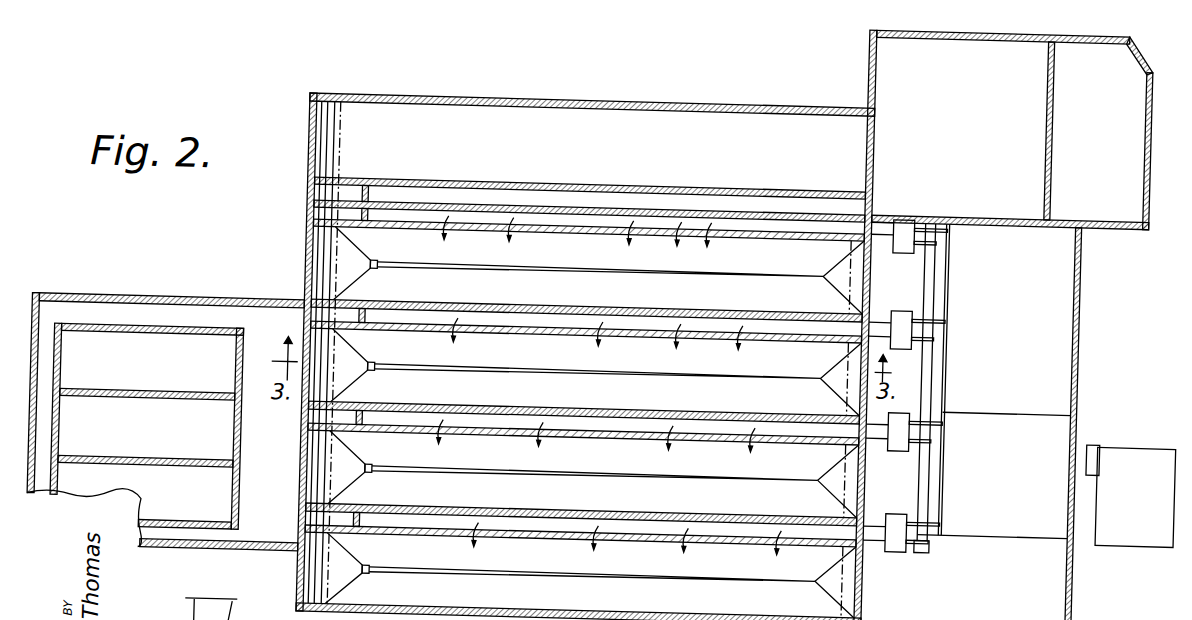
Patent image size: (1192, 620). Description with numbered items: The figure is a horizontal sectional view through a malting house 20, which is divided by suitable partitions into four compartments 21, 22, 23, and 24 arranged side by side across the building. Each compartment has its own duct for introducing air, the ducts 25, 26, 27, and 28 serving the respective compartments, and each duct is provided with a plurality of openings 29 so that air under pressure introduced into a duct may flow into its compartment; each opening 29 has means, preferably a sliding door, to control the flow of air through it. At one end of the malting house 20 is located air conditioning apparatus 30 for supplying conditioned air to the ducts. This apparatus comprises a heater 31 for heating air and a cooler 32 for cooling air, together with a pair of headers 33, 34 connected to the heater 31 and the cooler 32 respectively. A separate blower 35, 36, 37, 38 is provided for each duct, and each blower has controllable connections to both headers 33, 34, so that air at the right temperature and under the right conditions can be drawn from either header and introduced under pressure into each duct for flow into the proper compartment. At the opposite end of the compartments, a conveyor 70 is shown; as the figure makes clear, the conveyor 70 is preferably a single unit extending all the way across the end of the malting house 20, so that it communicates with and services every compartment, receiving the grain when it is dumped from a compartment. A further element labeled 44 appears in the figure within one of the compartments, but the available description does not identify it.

The malting house 20 is at (284, 100).
The compartment 21 is at (666, 597).
The compartment 22 is at (664, 494).
The compartment 23 is at (641, 393).
The compartment 24 is at (670, 292).
The duct 25 is at (730, 518).
The duct 26 is at (727, 416).
The duct 27 is at (778, 313).
The duct 28 is at (775, 212).
The openings 29 is at (600, 227).
The air conditioning apparatus 30 is at (1060, 322).
The heater 31 is at (1055, 252).
The cooler 32 is at (1058, 485).
The header 33 is at (949, 288).
The header 34 is at (925, 264).
The blower 35 is at (907, 536).
The blower 36 is at (902, 435).
The blower 37 is at (912, 333).
The blower 38 is at (904, 237).
The venturi tube 44 is at (482, 364).
The conveyor 70 is at (318, 571).